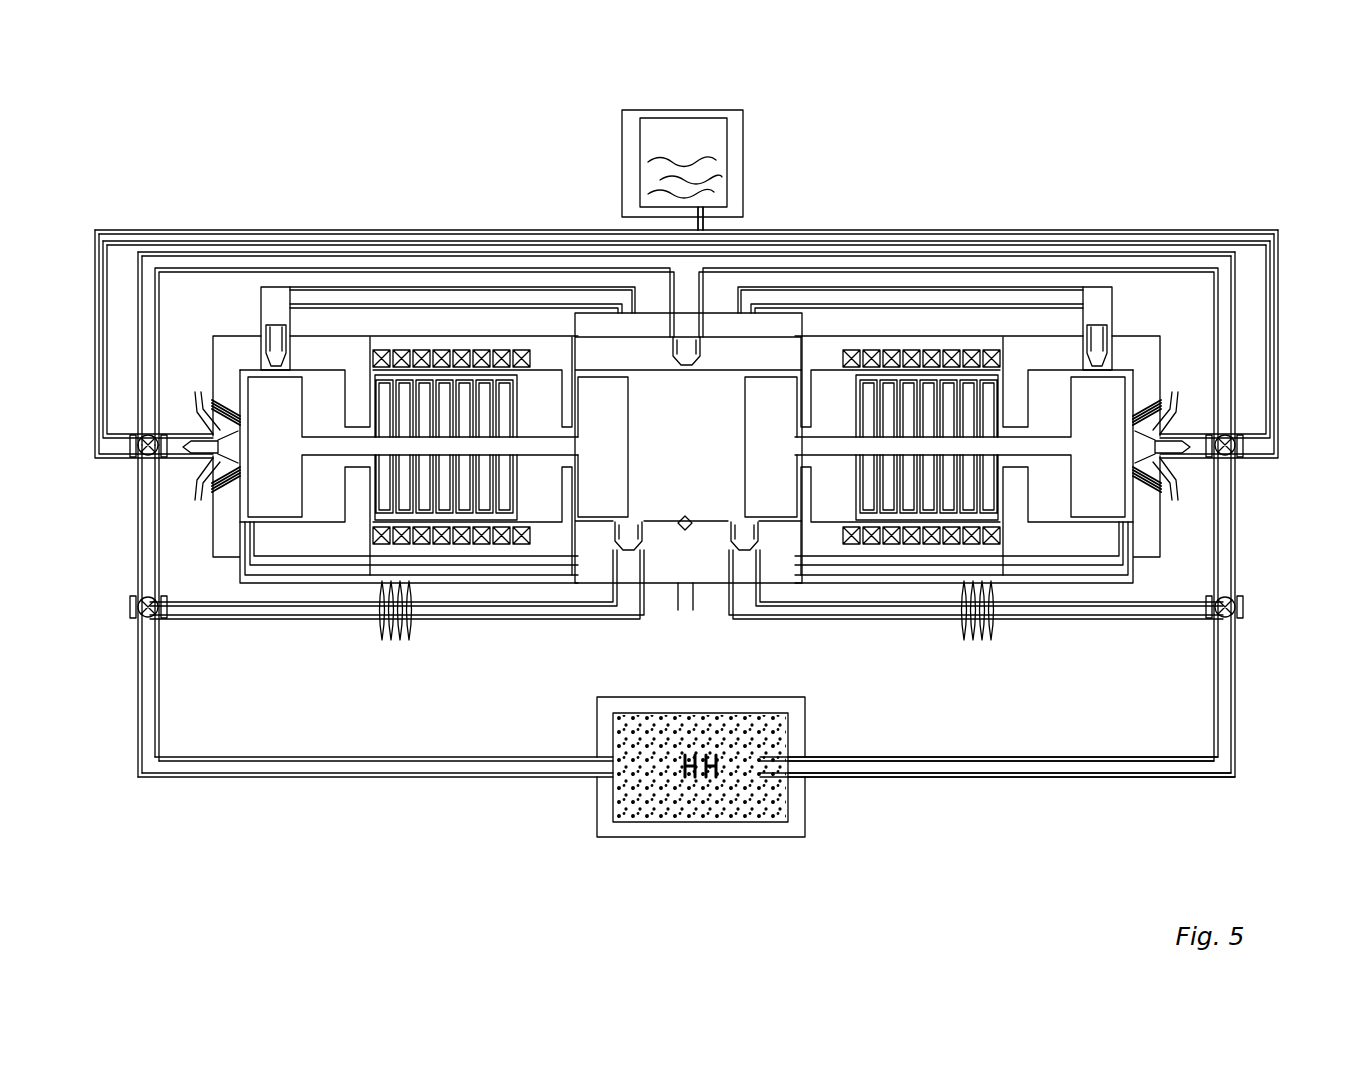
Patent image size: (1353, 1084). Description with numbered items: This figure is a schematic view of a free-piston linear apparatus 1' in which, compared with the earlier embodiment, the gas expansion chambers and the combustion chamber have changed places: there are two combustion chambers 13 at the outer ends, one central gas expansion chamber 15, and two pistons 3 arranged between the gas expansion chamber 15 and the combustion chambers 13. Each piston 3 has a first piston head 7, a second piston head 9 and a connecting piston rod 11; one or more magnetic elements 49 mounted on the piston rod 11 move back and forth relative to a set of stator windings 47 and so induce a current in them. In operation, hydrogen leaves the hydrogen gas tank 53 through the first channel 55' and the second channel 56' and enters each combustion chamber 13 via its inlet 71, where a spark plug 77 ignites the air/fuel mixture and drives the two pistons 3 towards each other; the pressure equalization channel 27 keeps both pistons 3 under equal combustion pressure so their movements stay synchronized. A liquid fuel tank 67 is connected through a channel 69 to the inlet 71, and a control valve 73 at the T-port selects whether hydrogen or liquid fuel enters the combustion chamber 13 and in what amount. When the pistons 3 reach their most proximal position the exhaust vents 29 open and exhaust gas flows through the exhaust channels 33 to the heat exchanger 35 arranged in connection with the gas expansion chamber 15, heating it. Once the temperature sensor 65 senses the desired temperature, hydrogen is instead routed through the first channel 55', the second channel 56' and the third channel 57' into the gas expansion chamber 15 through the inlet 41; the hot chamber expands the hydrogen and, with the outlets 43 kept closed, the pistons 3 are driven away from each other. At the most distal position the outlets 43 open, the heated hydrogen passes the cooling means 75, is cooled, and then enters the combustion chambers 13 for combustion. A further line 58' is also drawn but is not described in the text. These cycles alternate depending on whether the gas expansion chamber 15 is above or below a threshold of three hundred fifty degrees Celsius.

The free-piston linear apparatus 1' is at (1021, 96).
The piston 3 is at (858, 437).
The first piston head 7 is at (1090, 500).
The second piston head 9 is at (765, 503).
The piston rod 11 is at (930, 440).
The combustion chamber 13 is at (245, 385).
The gas expansion chamber 15 is at (723, 383).
The pressure equalization channel 27 is at (490, 570).
The exhaust vents 29 is at (272, 330).
The exhaust channels 33 is at (360, 295).
The heat exchanger 35 is at (643, 310).
The gas inlet 41 is at (687, 350).
The gas outlet 43 is at (628, 540).
The stator windings 47 is at (475, 370).
The magnetic element 49 is at (380, 490).
The hydrogen gas tank 53 is at (805, 735).
The first channel 55' is at (686, 746).
The second channel 56' is at (121, 611).
The third channel 57' is at (406, 348).
The lower branch line 58' is at (387, 606).
The temperature sensor 65 is at (685, 516).
The liquid fuel tank 67 is at (745, 140).
The channel 69 is at (748, 242).
The fuel inlet 71 is at (200, 450).
The control valve 73 is at (233, 400).
The cooling means 75 is at (405, 625).
The spark plug 77 is at (235, 478).